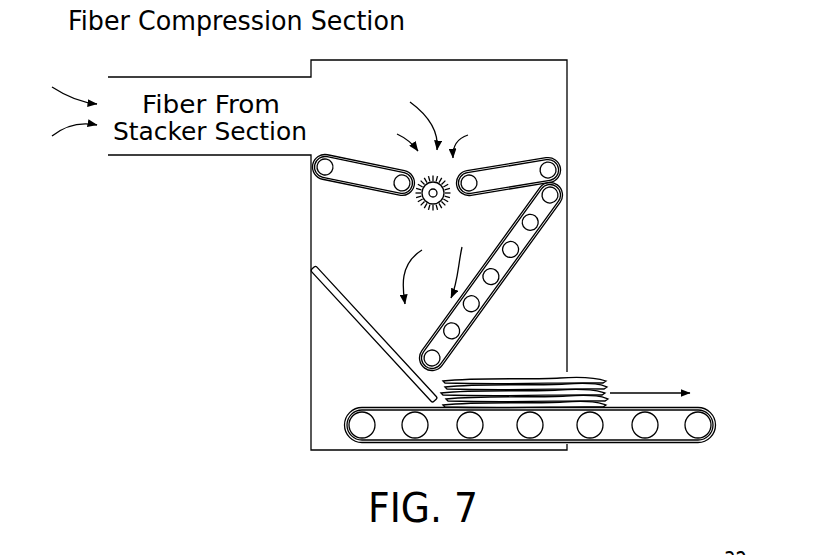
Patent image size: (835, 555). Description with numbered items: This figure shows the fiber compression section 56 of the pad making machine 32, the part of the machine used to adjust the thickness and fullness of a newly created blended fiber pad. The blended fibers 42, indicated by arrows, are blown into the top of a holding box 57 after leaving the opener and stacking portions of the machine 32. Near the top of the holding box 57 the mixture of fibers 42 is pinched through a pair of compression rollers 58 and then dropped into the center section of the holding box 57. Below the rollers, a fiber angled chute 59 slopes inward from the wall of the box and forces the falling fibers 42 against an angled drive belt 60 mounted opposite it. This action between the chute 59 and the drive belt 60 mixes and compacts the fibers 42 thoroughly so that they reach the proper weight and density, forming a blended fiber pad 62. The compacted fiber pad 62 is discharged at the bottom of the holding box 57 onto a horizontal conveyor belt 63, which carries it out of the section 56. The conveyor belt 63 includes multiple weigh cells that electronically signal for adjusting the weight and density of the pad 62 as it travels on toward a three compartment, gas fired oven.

The pad making machine 32 is at (652, 85).
The fibers 42 is at (482, 232).
The fiber compression section 56 is at (546, 99).
The holding box 57 is at (518, 78).
The compression rollers 58 is at (367, 190).
The fiber angled chute 59 is at (363, 328).
The angled drive belt 60 is at (497, 267).
The blended fiber pad 62 is at (578, 392).
The horizontal conveyor belt 63 is at (677, 441).